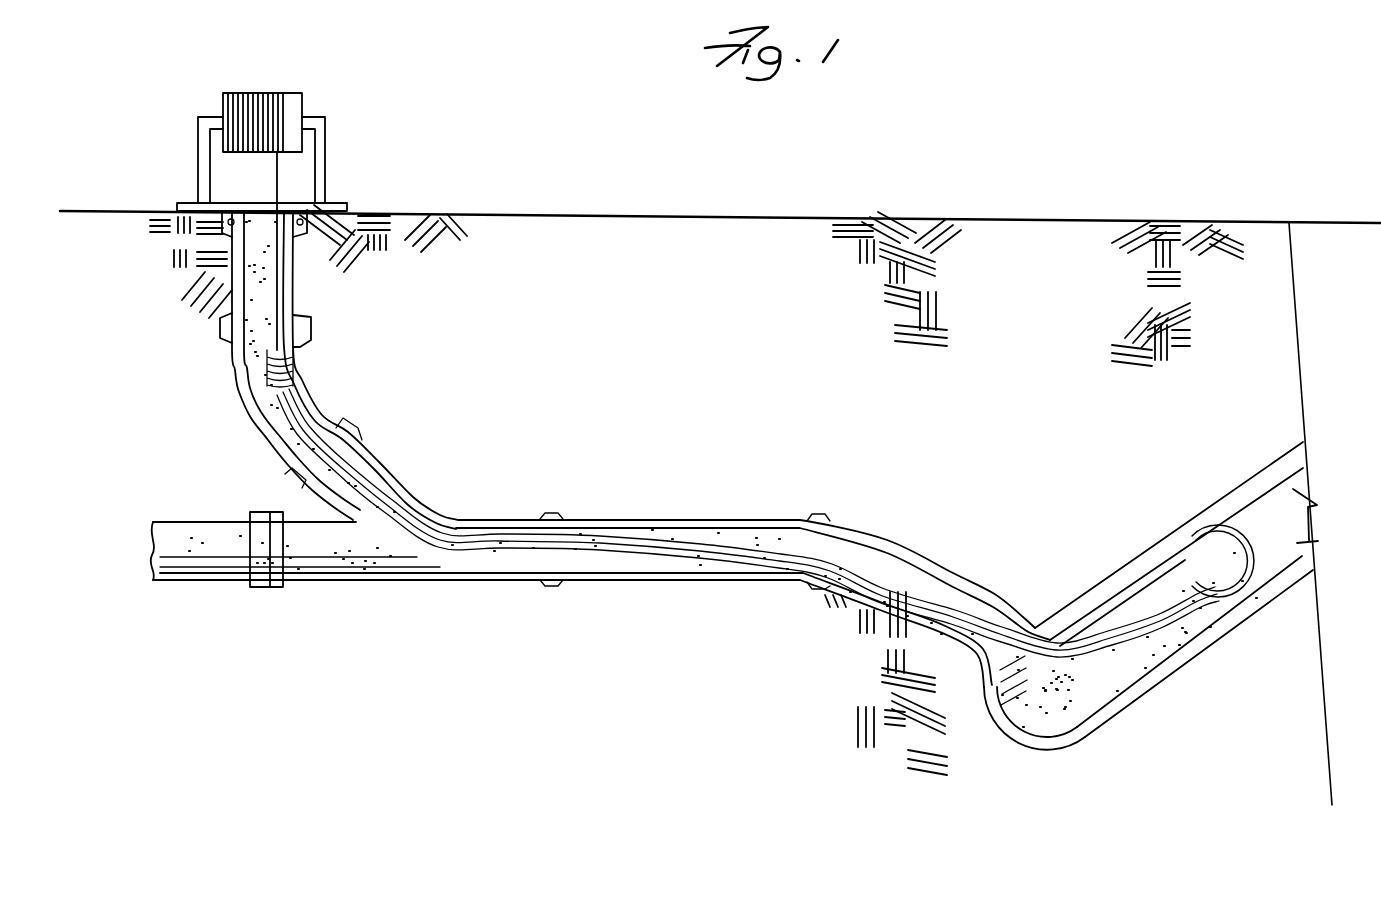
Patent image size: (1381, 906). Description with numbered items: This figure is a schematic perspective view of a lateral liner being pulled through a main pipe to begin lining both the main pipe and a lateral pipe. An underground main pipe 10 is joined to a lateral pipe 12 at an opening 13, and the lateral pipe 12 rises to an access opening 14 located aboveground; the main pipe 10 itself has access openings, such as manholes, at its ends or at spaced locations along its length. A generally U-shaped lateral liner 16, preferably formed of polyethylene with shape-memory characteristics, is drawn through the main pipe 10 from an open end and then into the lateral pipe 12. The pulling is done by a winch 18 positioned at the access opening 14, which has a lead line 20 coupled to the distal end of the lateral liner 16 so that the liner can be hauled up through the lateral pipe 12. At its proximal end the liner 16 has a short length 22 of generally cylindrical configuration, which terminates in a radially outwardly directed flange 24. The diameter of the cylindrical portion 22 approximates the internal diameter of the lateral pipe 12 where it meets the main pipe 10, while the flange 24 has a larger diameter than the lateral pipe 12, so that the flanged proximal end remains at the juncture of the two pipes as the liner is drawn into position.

The main pipe 10 is at (1240, 490).
The lateral pipe 12 is at (777, 521).
The opening 13 is at (1012, 715).
The access opening 14 is at (253, 212).
The lateral liner 16 is at (686, 543).
The winch 18 is at (285, 92).
The lead line 20 is at (283, 190).
The short length 22 is at (1228, 625).
The flange 24 is at (1306, 543).